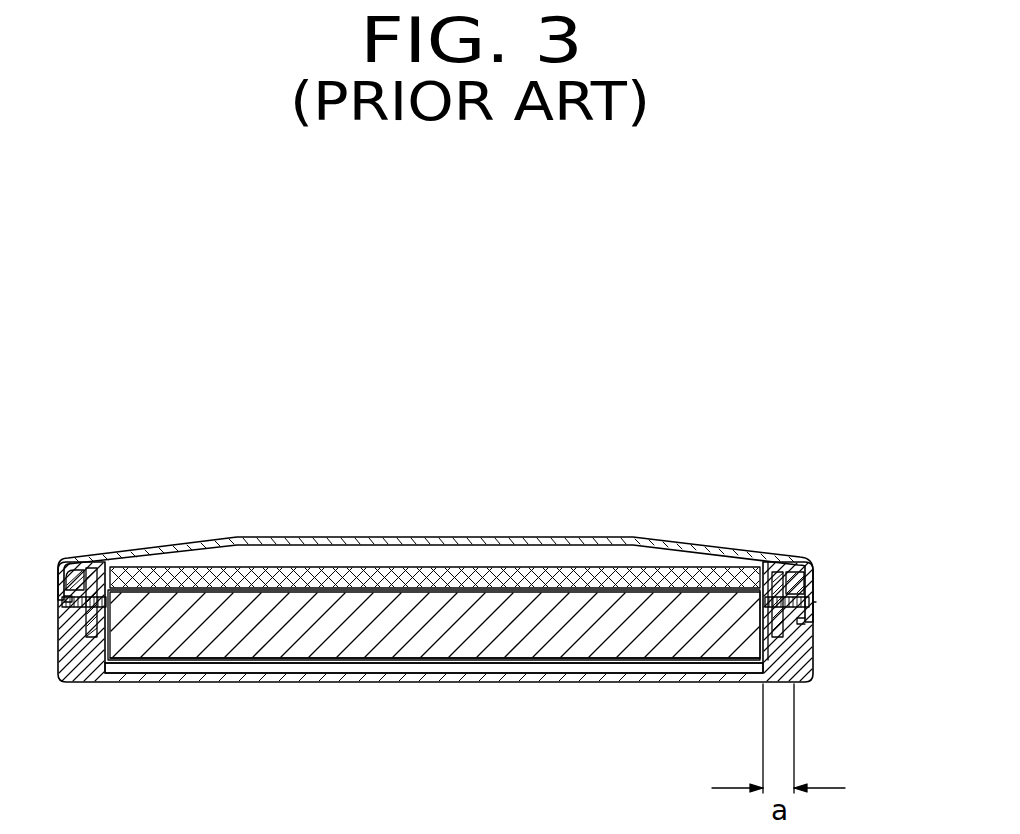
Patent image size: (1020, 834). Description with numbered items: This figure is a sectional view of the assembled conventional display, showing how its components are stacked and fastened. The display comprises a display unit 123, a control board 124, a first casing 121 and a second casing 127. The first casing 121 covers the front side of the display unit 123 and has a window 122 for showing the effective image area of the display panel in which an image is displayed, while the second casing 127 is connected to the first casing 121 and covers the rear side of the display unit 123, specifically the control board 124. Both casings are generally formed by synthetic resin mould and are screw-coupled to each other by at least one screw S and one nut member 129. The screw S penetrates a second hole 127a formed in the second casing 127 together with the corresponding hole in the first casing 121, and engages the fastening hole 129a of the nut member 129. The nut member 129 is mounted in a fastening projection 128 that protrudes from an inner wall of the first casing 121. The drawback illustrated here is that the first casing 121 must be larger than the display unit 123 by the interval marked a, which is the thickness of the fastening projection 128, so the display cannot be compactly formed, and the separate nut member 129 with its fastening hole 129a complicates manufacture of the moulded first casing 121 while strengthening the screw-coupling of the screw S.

The first casing 121 is at (790, 680).
The window 122 is at (125, 666).
The display unit 123 is at (470, 640).
The control board 124 is at (352, 577).
The second casing 127 is at (508, 540).
The second hole 127a is at (74, 566).
The fastening projection 128 is at (756, 620).
The nut member 129 is at (765, 576).
The fastening hole 129a is at (800, 562).
The screw S is at (816, 602).